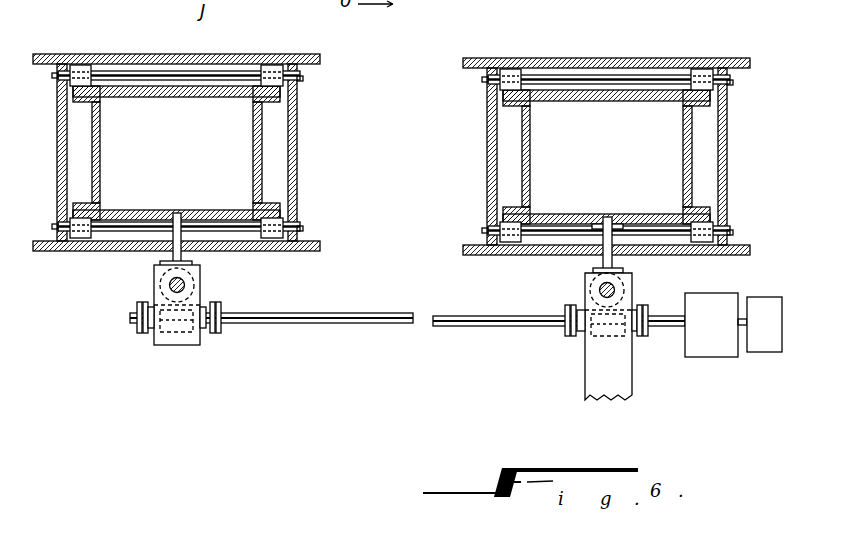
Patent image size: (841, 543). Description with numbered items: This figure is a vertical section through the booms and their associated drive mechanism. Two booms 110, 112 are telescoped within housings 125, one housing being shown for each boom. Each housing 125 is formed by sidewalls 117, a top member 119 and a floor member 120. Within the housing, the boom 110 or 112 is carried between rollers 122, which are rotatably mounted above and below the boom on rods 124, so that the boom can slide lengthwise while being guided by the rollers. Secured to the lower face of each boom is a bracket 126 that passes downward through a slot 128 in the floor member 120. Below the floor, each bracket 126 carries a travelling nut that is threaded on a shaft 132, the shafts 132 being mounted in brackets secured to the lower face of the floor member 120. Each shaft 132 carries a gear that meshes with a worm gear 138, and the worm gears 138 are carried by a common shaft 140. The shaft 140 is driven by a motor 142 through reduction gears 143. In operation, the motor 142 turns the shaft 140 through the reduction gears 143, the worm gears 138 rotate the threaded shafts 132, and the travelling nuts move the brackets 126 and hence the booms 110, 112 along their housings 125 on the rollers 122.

The boom 110 is at (692, 174).
The boom 112 is at (262, 165).
The sidewalls 117 is at (66, 182).
The top members 119 is at (255, 55).
The floor members 120 is at (84, 252).
The rollers 122 is at (272, 68).
The rods 124 is at (186, 74).
The housings 125 is at (399, 142).
The brackets 126 is at (175, 236).
The slots 128 is at (172, 256).
The shafts 132 is at (186, 283).
The worm gears 138 is at (216, 334).
The shaft 140 is at (492, 326).
The motor 142 is at (760, 349).
The reduction gears 143 is at (727, 353).